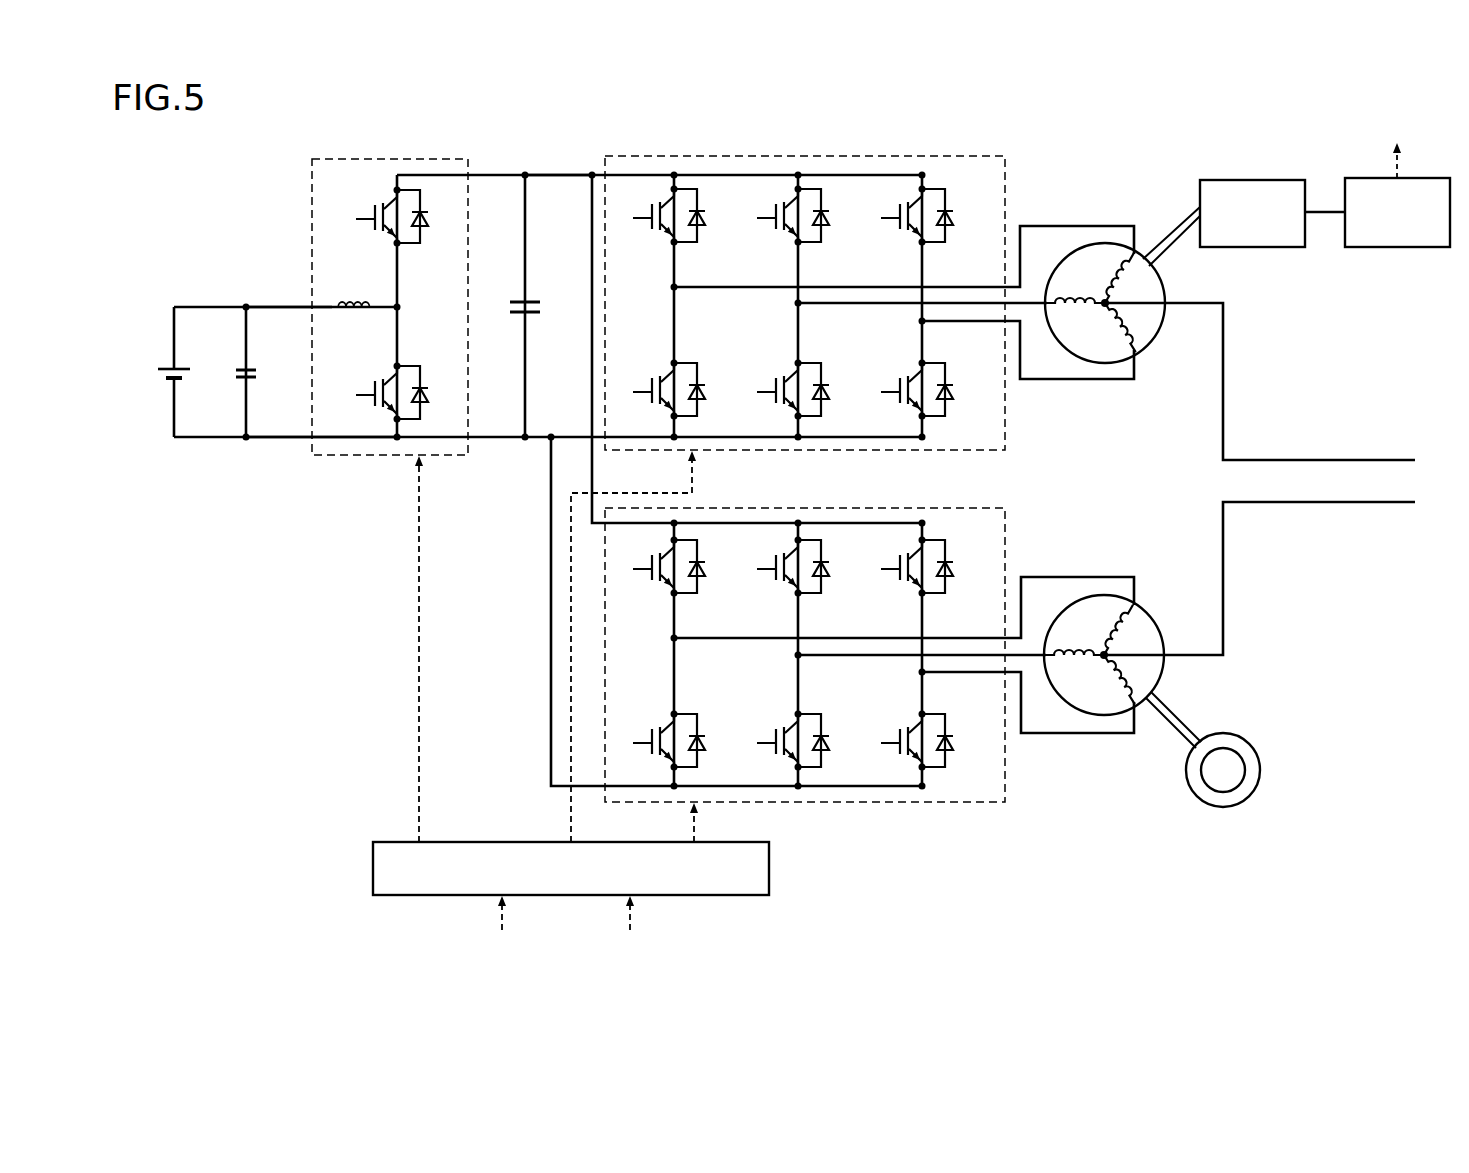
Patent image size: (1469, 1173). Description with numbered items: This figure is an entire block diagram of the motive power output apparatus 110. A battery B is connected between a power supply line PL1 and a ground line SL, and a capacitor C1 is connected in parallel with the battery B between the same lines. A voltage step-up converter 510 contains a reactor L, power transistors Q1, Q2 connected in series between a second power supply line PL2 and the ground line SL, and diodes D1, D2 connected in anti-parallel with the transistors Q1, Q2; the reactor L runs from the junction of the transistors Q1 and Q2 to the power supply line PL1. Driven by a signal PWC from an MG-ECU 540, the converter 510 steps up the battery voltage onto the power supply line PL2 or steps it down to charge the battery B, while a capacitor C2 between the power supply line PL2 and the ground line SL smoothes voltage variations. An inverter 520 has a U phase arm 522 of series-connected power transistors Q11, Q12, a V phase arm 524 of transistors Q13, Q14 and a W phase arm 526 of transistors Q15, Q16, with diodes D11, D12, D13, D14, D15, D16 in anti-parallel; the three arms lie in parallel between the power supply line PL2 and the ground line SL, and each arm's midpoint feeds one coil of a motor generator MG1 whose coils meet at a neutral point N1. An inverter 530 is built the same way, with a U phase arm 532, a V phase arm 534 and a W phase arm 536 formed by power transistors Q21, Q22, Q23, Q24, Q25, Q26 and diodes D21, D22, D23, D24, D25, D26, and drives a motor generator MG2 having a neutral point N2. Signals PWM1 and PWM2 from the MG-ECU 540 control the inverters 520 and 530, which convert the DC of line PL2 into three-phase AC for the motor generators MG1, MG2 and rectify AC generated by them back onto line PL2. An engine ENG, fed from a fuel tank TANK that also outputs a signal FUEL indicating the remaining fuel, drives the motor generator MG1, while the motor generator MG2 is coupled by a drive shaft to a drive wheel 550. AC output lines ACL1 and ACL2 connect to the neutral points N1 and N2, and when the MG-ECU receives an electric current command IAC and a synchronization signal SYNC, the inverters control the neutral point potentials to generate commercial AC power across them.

The motive power output apparatus 110 is at (249, 143).
The battery B is at (183, 366).
The capacitor C1 is at (255, 368).
The capacitor C2 is at (538, 303).
The reactor L is at (354, 290).
The power supply line PL1 is at (283, 306).
The power supply line PL2 is at (558, 173).
The ground line SL is at (282, 438).
The voltage step-up converter 510 is at (390, 324).
The power transistor Q1 is at (373, 223).
The power transistor Q2 is at (373, 395).
The diode D1 is at (430, 216).
The diode D2 is at (430, 392).
The inverter 520 is at (805, 319).
The power transistor Q11 is at (650, 222).
The power transistor Q12 is at (650, 392).
The power transistor Q13 is at (774, 222).
The power transistor Q14 is at (774, 392).
The power transistor Q15 is at (898, 222).
The power transistor Q16 is at (898, 392).
The diode D11 is at (713, 215).
The diode D12 is at (713, 389).
The diode D13 is at (837, 215).
The diode D14 is at (837, 389).
The diode D15 is at (961, 215).
The diode D16 is at (961, 389).
The U phase arm 522 is at (666, 299).
The V phase arm 524 is at (789, 316).
The W phase arm 526 is at (909, 333).
The inverter 530 is at (805, 671).
The power transistor Q21 is at (650, 573).
The power transistor Q22 is at (650, 743).
The power transistor Q23 is at (774, 573).
The power transistor Q24 is at (774, 743).
The power transistor Q25 is at (898, 573).
The power transistor Q26 is at (898, 743).
The diode D21 is at (713, 566).
The diode D22 is at (713, 740).
The diode D23 is at (837, 566).
The diode D24 is at (837, 740).
The diode D25 is at (961, 566).
The diode D26 is at (961, 740).
The U phase arm 532 is at (666, 650).
The V phase arm 534 is at (789, 667).
The W phase arm 536 is at (909, 684).
The motor generator MG1 is at (1147, 343).
The motor generator MG2 is at (1147, 613).
The neutral point N1 is at (1104, 306).
The neutral point N2 is at (1103, 658).
The AC output line ACL1 is at (1362, 453).
The AC output line ACL2 is at (1375, 502).
The engine ENG is at (1255, 180).
The fuel tank TANK is at (1395, 248).
The signal FUEL is at (1391, 147).
The drive wheel 550 is at (1223, 807).
The MG-ECU 540 is at (388, 842).
The signal PWC is at (443, 649).
The signal PWM1 is at (670, 646).
The signal PWM2 is at (730, 822).
The electric current command IAC is at (498, 927).
The synchronization signal SYNC is at (625, 927).